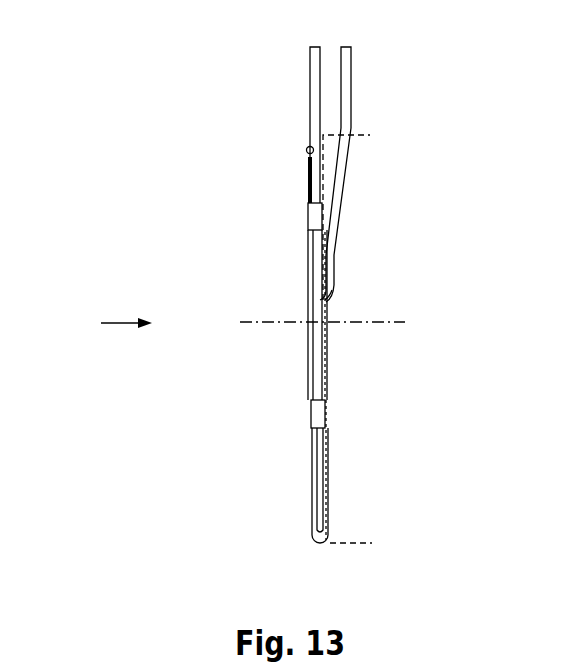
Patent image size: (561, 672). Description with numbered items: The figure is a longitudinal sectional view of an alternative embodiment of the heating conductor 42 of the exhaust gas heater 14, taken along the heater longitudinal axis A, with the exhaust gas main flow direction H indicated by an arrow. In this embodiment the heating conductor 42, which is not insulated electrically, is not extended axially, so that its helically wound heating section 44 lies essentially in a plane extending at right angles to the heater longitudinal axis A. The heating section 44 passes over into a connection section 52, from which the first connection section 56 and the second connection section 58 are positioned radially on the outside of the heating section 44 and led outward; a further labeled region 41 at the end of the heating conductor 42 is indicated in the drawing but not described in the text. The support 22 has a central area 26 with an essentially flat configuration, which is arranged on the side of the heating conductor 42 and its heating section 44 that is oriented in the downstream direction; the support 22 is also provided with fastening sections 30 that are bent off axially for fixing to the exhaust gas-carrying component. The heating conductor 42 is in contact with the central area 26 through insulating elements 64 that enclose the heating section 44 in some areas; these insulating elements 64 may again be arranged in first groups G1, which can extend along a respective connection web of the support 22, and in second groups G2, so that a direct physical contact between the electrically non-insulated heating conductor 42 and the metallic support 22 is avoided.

The exhaust gas heater 14 is at (120, 107).
The first connection section 56 is at (309, 86).
The second connection section 58 is at (352, 75).
The first groups of insulating elements G1 is at (291, 149).
The second groups of insulating elements G2 is at (291, 215).
The support 22 is at (327, 192).
The connection section 52 is at (333, 230).
The heating section 44 is at (307, 285).
The heater longitudinal axis A is at (388, 322).
The central area 26 is at (325, 363).
The insulating elements 64 is at (325, 412).
The heating conductor 42 is at (291, 465).
The distal tip 41 is at (289, 551).
The fastening sections 30 is at (358, 545).
The exhaust gas main flow direction H is at (114, 323).